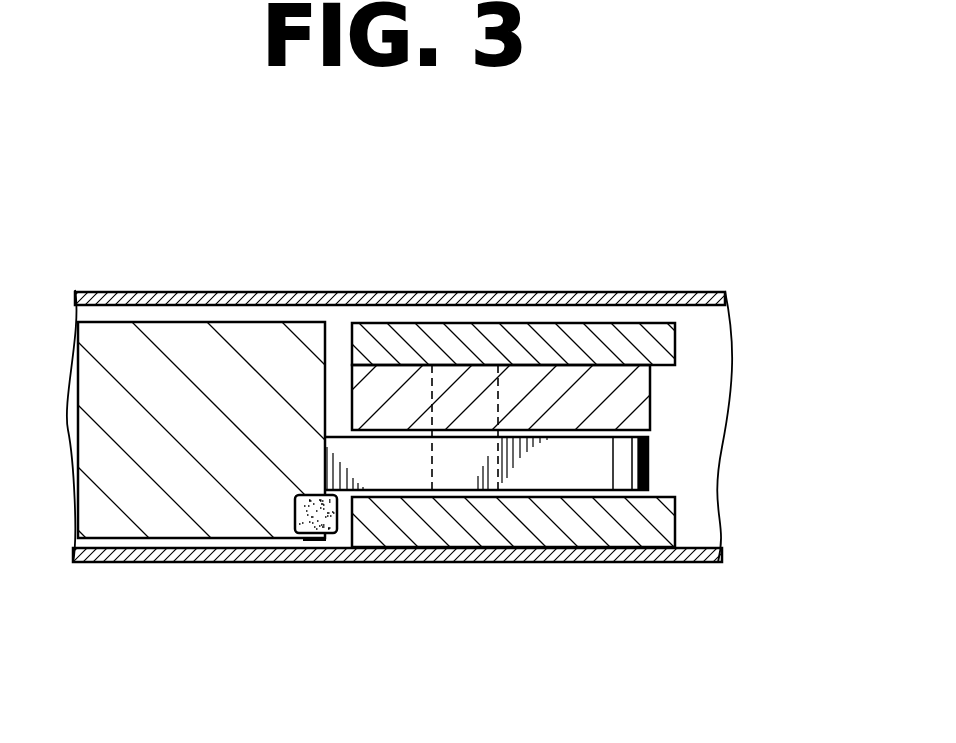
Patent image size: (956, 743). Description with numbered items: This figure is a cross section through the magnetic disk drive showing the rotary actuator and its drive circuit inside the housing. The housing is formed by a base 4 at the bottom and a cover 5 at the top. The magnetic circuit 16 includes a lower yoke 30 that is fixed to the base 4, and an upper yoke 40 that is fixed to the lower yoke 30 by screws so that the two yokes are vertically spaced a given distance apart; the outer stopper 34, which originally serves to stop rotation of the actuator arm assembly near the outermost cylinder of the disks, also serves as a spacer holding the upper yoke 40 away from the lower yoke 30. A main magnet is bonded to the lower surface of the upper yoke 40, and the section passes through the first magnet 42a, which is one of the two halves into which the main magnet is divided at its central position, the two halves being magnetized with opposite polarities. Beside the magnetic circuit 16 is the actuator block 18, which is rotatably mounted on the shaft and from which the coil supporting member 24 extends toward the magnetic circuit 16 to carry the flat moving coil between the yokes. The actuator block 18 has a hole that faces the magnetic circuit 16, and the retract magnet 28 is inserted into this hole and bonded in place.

The base 4 is at (648, 563).
The cover 5 is at (355, 295).
The magnetic circuit 16 is at (658, 401).
The actuator block 18 is at (170, 335).
The coil supporting member 24 is at (648, 458).
The retract magnet 28 is at (293, 518).
The lower yoke 30 is at (540, 538).
The outer stopper 34 is at (432, 437).
The upper yoke 40 is at (472, 331).
The first magnet 42a is at (558, 380).